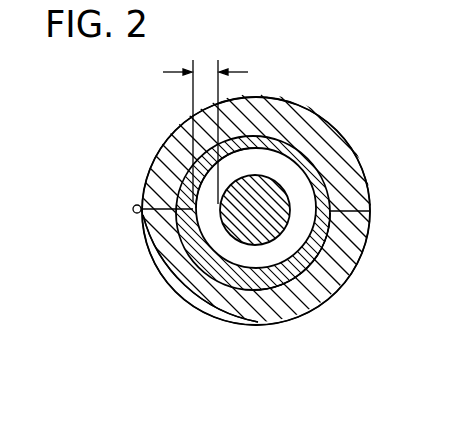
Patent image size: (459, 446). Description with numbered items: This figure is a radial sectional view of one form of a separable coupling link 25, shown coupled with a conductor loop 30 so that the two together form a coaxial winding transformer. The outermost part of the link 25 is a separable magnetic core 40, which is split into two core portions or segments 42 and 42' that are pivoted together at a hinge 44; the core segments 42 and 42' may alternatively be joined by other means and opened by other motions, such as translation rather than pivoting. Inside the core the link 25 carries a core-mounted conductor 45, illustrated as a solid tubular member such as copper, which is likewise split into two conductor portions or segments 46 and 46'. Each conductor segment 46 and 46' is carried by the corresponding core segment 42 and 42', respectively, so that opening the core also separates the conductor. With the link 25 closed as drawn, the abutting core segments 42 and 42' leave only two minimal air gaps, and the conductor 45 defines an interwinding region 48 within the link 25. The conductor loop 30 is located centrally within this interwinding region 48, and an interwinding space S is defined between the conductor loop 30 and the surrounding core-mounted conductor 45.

The coupling link 25 is at (336, 60).
The conductor loop 30 is at (250, 226).
The separable magnetic core 40 is at (270, 112).
The core segment 42 is at (229, 201).
The core segment 42' is at (188, 274).
The hinge 44 is at (133, 210).
The core-mounted conductor 45 is at (294, 292).
The conductor segment 46 is at (242, 212).
The conductor segment 46' is at (340, 269).
The interwinding region 48 is at (200, 210).
The interwinding space S is at (205, 132).